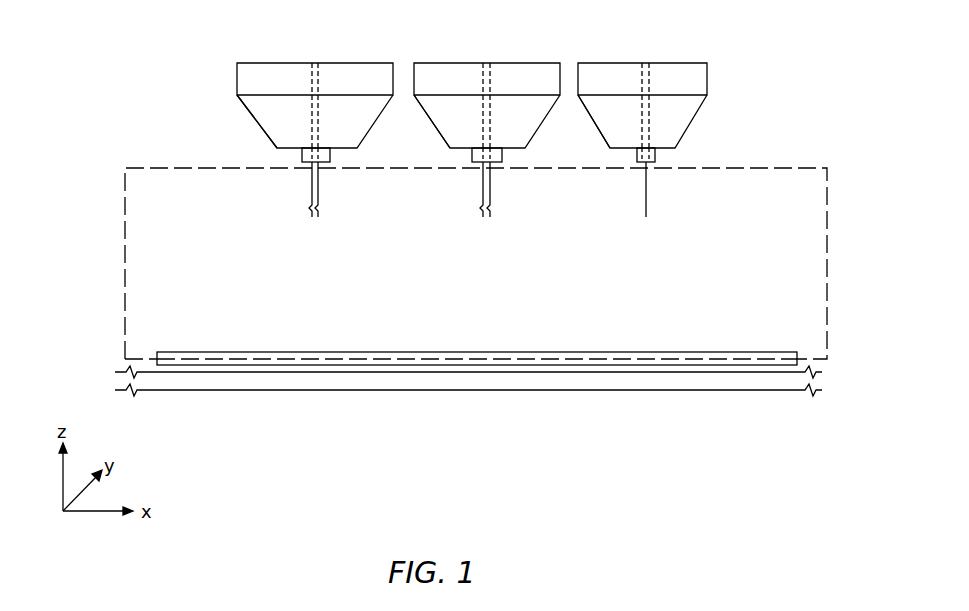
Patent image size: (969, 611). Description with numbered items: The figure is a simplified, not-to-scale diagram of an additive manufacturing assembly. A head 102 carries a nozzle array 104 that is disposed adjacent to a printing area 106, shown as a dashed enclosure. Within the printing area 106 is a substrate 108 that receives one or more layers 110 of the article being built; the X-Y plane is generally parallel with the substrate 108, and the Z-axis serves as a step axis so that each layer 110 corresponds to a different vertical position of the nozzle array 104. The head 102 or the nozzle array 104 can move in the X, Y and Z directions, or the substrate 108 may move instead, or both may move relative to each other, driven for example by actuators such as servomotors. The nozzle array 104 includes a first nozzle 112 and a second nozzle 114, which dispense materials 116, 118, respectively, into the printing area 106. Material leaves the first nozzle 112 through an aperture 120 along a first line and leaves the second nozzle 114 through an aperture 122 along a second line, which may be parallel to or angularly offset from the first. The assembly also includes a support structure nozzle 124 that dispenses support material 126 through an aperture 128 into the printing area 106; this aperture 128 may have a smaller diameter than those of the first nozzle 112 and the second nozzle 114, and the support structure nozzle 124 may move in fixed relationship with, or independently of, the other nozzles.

The head 102 is at (357, 63).
The nozzle array 104 is at (712, 130).
The printing area 106 is at (827, 218).
The substrate 108 is at (232, 383).
The layer 110 is at (670, 352).
The first nozzle 112 is at (265, 113).
The second nozzle 114 is at (442, 120).
The material 116 is at (318, 212).
The material 118 is at (490, 212).
The aperture 120 is at (330, 160).
The aperture 122 is at (502, 160).
The support structure nozzle 124 is at (608, 122).
The support material 126 is at (646, 212).
The aperture 128 is at (655, 160).